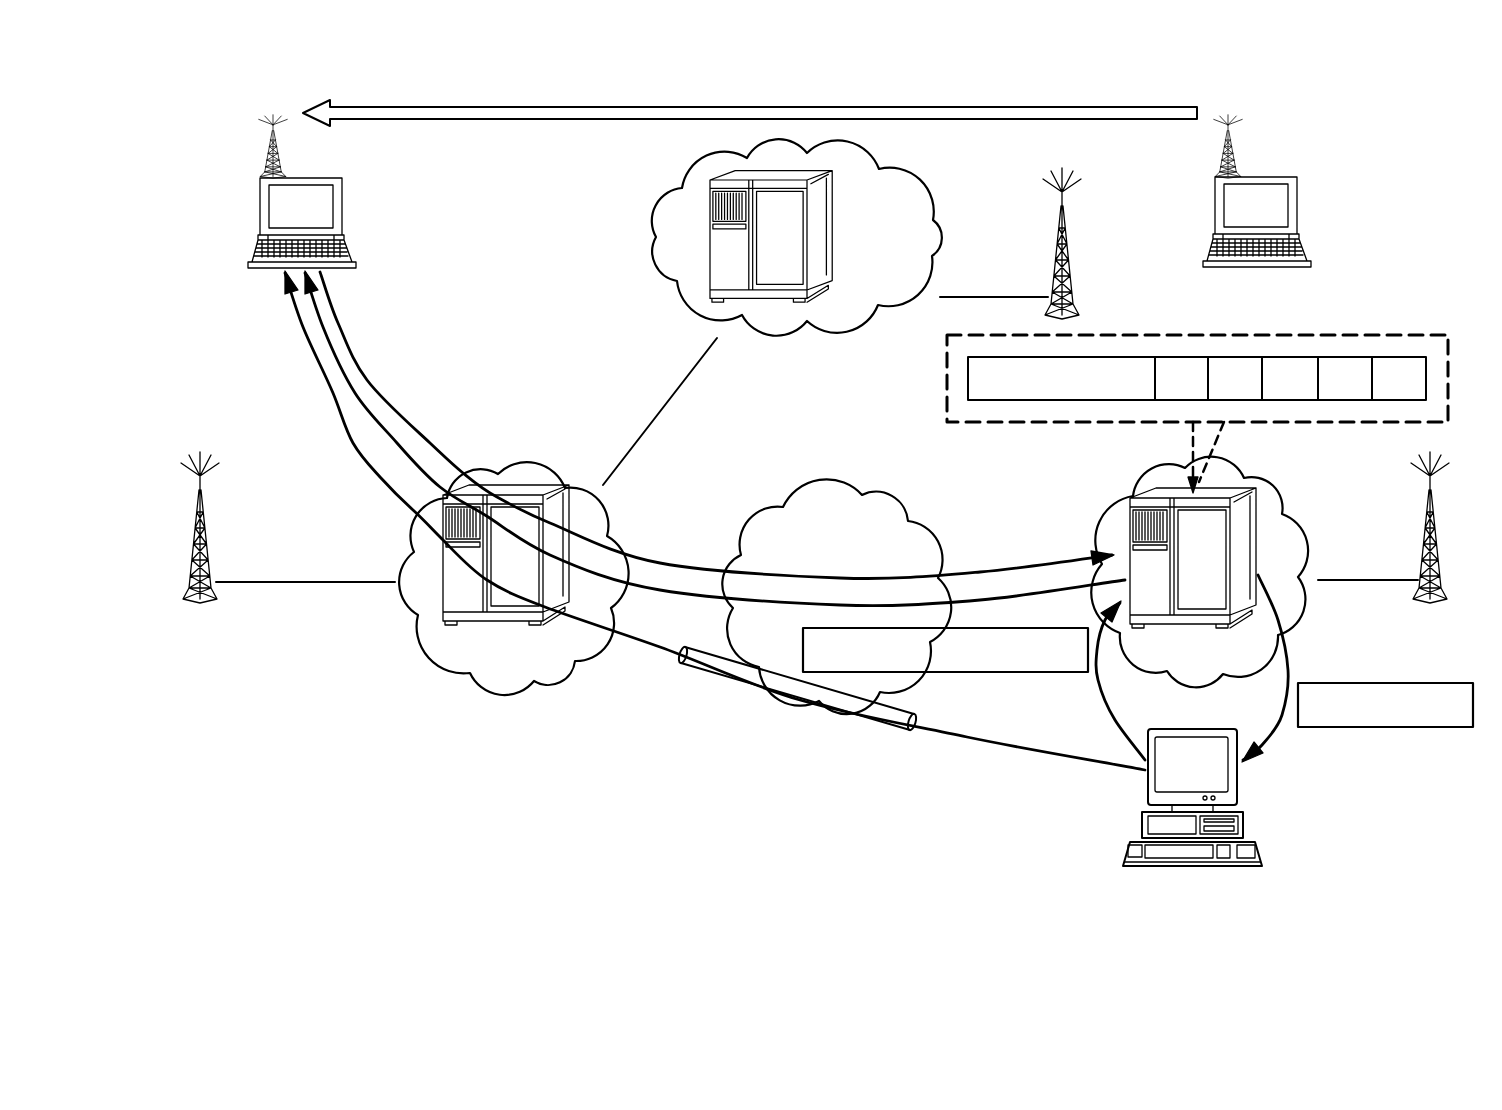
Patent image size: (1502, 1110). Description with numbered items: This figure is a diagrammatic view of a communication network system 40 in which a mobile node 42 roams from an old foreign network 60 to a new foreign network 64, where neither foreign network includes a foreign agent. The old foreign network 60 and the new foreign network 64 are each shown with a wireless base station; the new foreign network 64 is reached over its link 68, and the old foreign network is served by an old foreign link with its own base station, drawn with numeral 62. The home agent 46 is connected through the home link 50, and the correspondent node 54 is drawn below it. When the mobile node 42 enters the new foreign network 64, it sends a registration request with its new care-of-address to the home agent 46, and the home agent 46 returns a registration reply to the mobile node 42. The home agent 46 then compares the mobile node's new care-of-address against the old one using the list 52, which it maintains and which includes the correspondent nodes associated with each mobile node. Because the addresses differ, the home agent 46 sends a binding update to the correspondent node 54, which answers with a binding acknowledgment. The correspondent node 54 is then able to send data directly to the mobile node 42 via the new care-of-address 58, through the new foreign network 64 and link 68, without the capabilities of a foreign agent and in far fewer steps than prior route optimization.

The communication network system 40 is at (388, 741).
The mobile node 42 is at (343, 207).
The home agent 46 is at (1242, 555).
The home link 50 is at (1438, 547).
The list 52 is at (1450, 380).
The correspondent node 54 is at (818, 472).
The new care-of-address 58 is at (712, 676).
The old foreign network 60 is at (710, 245).
The old foreign link base station 62 is at (1068, 263).
The new foreign network 64 is at (506, 487).
The link 68 is at (192, 547).